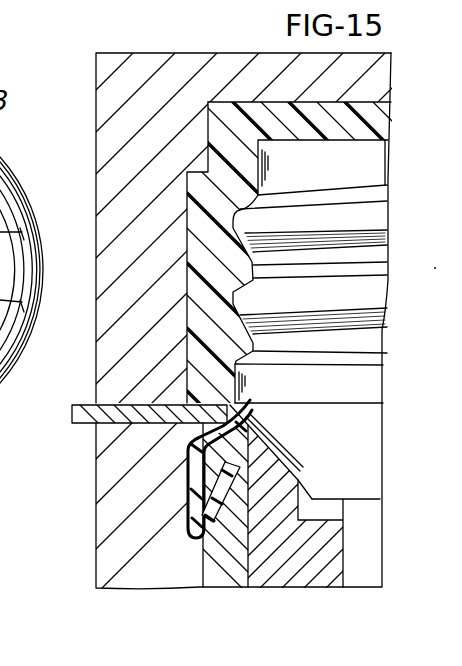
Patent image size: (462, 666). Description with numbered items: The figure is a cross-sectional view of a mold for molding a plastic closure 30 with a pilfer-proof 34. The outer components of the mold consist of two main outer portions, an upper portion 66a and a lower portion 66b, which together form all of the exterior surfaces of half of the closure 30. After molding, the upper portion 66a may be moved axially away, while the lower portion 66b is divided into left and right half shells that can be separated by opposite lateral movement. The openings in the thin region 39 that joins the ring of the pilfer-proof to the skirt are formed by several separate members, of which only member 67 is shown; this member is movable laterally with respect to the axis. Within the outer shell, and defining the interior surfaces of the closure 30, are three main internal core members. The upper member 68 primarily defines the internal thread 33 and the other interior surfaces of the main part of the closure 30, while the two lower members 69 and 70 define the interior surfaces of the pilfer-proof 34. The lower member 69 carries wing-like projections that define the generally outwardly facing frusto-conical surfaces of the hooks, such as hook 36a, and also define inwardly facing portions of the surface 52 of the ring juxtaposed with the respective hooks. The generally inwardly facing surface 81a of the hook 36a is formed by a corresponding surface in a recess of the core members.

The closure 30 is at (277, 94).
The internal thread 33 is at (237, 291).
The pilfer-proof 34 is at (180, 524).
The hook 36a is at (242, 468).
The region 39 is at (266, 383).
The surface of the ring 52 is at (193, 486).
The upper portion 66a is at (155, 53).
The lower portion 66b is at (96, 490).
The member 67 is at (76, 425).
The upper member 68 is at (350, 173).
The lower member 69 is at (288, 574).
The lower member 70 is at (222, 576).
The inwardly facing surface 81a is at (232, 502).